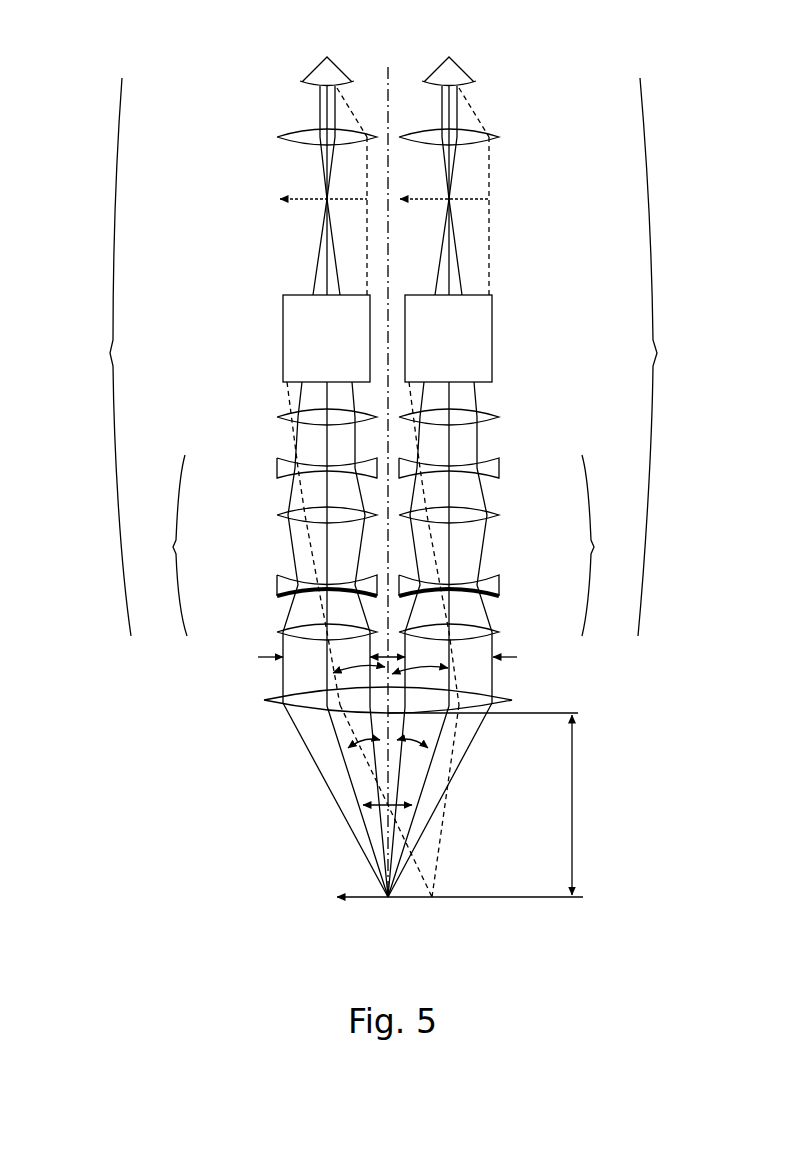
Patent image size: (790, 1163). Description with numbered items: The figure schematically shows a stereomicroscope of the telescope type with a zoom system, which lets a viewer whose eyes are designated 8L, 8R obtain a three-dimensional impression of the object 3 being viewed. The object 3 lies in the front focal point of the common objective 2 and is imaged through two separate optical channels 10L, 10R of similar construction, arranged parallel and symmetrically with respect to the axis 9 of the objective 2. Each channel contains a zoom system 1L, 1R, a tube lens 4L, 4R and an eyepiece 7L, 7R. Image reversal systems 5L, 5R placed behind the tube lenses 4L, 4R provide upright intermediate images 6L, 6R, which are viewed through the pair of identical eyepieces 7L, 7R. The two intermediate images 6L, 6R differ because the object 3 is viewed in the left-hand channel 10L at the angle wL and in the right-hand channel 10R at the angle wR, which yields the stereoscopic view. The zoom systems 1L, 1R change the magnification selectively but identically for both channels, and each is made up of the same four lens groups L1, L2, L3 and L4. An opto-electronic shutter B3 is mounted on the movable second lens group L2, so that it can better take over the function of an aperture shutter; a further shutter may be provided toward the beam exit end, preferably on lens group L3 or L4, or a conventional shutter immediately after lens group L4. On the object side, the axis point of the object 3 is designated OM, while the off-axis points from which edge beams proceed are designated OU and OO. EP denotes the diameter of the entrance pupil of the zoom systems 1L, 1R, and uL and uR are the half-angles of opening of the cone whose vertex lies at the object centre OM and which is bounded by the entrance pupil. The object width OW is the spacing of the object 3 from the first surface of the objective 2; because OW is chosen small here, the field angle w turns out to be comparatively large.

The left eye of the viewer 8L is at (317, 63).
The right eye of the viewer 8R is at (463, 63).
The axis of the objective 9 is at (389, 67).
The left eyepiece 7L is at (302, 129).
The right eyepiece 7R is at (478, 129).
The left intermediate image 6L is at (302, 197).
The right intermediate image 6R is at (475, 197).
The left image reversal system 5L is at (288, 320).
The right image reversal system 5R is at (487, 320).
The left tube lens 4L is at (282, 414).
The right tube lens 4R is at (490, 414).
The fourth lens group L4 is at (282, 464).
The third lens group L3 is at (283, 515).
The second lens group L2 is at (287, 582).
The opto-electronic shutter B3 is at (287, 593).
The first lens group L1 is at (285, 635).
The entrance pupil diameter EP is at (388, 654).
The field angle w is at (390, 729).
The left viewing channel 10L is at (101, 357).
The right viewing channel 10R is at (668, 357).
The left zoom system 1L is at (166, 545).
The right zoom system 1R is at (603, 545).
The objective 2 is at (270, 703).
The object 3 is at (363, 897).
The object width OW is at (487, 804).
The axis point of the object OM is at (388, 825).
The off-axis object point OU is at (399, 824).
The off-axis object point OO is at (337, 920).
The left half-angle of opening uL is at (342, 817).
The right half-angle of opening uR is at (436, 817).
The left viewing angle wL is at (365, 748).
The right viewing angle wR is at (408, 747).